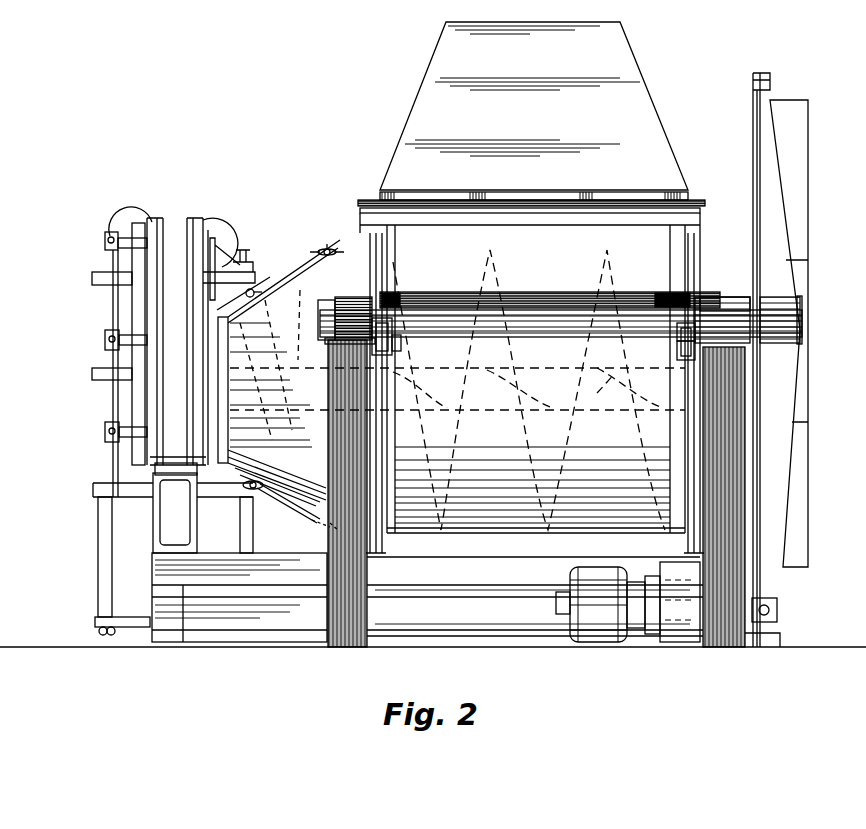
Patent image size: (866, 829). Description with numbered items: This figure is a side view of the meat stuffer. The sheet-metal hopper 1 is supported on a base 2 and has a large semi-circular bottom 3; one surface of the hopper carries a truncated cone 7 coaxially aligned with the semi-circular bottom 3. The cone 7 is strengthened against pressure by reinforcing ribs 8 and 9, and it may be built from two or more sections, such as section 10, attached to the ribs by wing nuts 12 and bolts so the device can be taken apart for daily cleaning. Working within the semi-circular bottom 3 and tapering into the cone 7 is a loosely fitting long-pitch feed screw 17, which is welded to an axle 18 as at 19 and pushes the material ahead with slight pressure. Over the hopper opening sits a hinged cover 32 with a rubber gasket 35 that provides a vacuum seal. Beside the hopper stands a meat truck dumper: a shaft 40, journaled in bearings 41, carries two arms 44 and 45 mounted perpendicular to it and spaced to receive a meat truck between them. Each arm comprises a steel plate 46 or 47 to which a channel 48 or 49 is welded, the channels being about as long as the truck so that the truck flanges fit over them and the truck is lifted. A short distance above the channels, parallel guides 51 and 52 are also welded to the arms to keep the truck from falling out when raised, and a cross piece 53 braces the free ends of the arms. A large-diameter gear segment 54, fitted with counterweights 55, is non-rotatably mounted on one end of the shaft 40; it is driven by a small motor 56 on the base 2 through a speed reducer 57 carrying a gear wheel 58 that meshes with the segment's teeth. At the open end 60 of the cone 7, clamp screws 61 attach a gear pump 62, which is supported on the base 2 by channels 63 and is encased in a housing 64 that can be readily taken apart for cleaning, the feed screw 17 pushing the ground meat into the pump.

The hopper 1 is at (536, 234).
The base 2 is at (262, 620).
The semi-circular bottom 3 is at (474, 534).
The truncated cone 7 is at (294, 292).
The reinforcing rib 8 is at (345, 246).
The reinforcing rib 9 is at (293, 508).
The cone section 10 is at (275, 298).
The wing nuts 12 is at (325, 256).
The feed screw 17 is at (450, 506).
The axle 18 is at (529, 390).
The weld 19 is at (457, 389).
The cover 32 is at (440, 60).
The gasket 35 is at (360, 202).
The shaft 40 is at (528, 320).
The bearings 41 is at (355, 296).
The arm 44 is at (380, 352).
The arm 45 is at (684, 360).
The steel plate 46 is at (700, 320).
The steel plate 47 is at (330, 352).
The channel 48 is at (398, 346).
The channel 49 is at (676, 342).
The guide 51 is at (398, 300).
The guide 52 is at (670, 297).
The cross piece 53 is at (520, 300).
The gear segment 54 is at (764, 76).
The counterweights 55 is at (800, 133).
The motor 56 is at (560, 603).
The speed reducer 57 is at (680, 600).
The gear wheel 58 is at (775, 610).
The open end 60 is at (228, 422).
The clamp screws 61 is at (108, 343).
The gear pump 62 is at (160, 300).
The channels 63 is at (152, 515).
The housing 64 is at (175, 220).